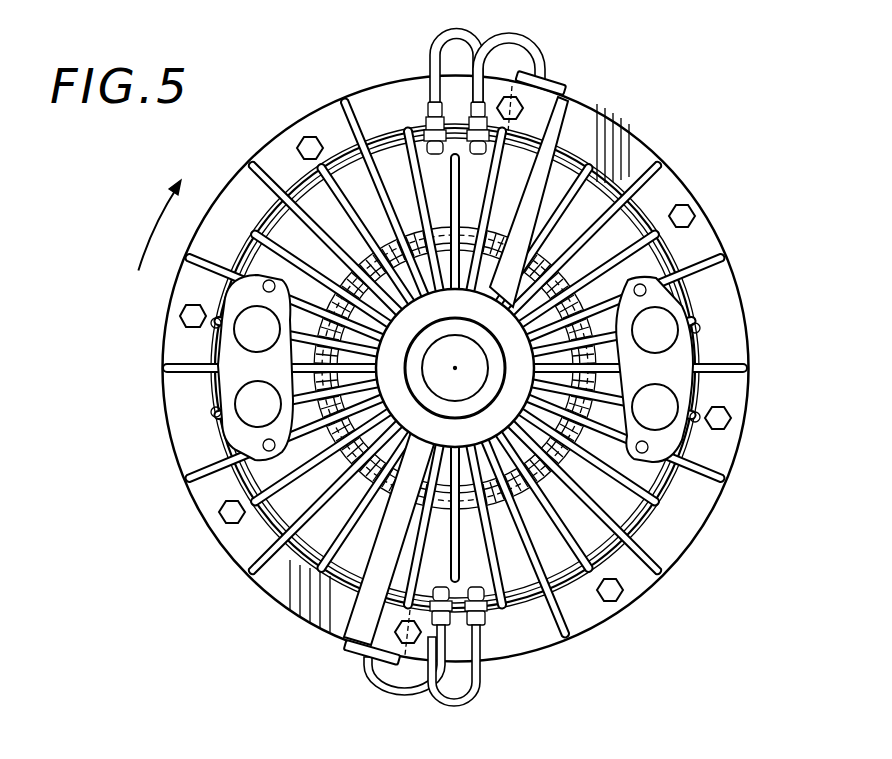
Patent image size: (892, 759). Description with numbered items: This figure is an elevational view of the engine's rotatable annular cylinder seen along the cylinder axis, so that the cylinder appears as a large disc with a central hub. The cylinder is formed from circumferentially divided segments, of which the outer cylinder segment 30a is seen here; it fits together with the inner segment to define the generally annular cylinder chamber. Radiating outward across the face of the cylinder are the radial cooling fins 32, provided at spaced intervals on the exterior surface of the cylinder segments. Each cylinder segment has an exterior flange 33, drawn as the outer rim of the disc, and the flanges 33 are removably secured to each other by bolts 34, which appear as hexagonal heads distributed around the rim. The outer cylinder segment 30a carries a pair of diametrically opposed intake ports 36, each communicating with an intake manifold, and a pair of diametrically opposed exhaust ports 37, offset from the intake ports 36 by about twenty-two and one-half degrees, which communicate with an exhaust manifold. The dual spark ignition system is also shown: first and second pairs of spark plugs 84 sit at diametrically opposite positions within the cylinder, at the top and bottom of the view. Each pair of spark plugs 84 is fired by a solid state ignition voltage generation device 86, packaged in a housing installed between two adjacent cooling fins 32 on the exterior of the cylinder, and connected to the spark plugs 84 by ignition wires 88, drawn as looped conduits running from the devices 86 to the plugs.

The outer cylinder segment 30a is at (633, 517).
The radial cooling fins 32 is at (660, 162).
The exterior flange 33 is at (168, 444).
The bolts 34 is at (181, 314).
The intake ports 36 is at (456, 368).
The exhaust ports 37 is at (456, 367).
The spark plugs 84 is at (452, 620).
The ignition voltage generation device 86 is at (345, 650).
The ignition wires 88 is at (442, 708).